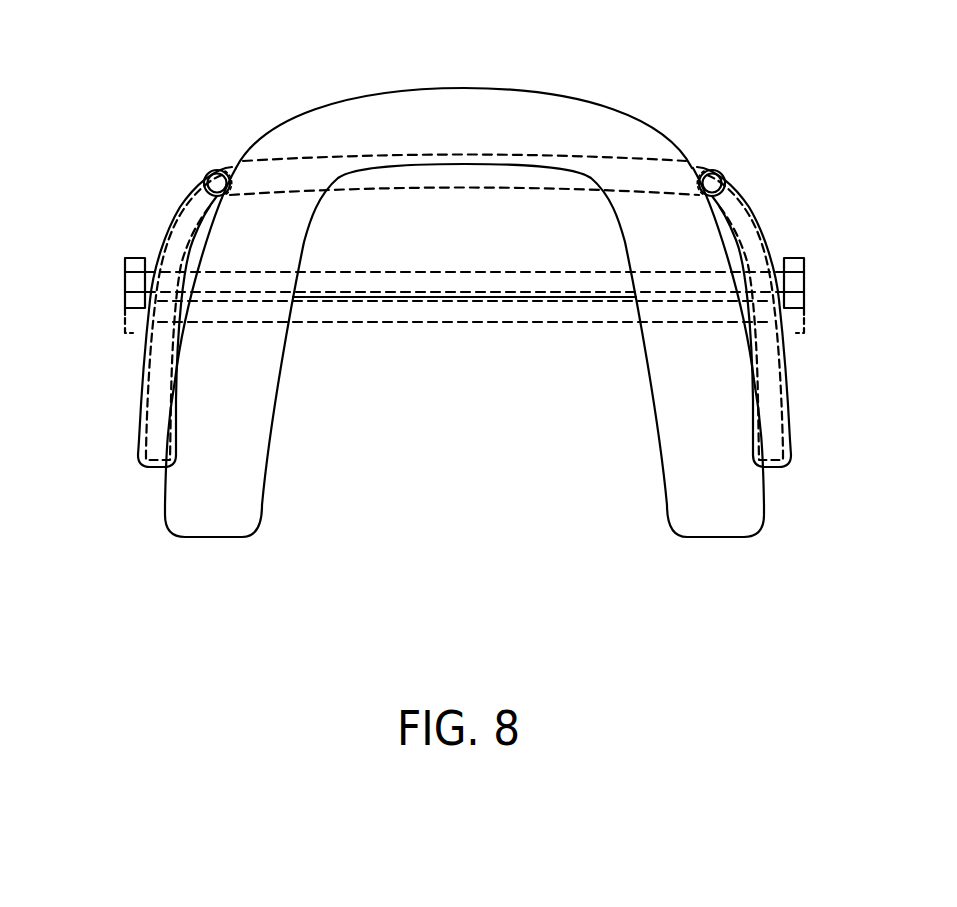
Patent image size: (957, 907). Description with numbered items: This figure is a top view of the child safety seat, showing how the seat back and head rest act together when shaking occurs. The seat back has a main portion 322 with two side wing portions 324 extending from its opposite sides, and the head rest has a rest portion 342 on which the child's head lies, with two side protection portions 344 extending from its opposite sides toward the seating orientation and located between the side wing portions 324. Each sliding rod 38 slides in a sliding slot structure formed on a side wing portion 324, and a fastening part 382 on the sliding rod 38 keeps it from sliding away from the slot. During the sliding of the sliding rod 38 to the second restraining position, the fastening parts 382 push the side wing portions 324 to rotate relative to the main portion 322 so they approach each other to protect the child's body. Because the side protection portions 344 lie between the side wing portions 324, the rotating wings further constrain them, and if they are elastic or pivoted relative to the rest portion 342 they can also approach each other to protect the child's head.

The rest portion 342 is at (461, 97).
The main portion 322 is at (294, 157).
The side wing portions 324 is at (180, 218).
The sliding rod 38 is at (173, 268).
The fastening part 382 is at (128, 265).
The side protection portions 344 is at (250, 460).